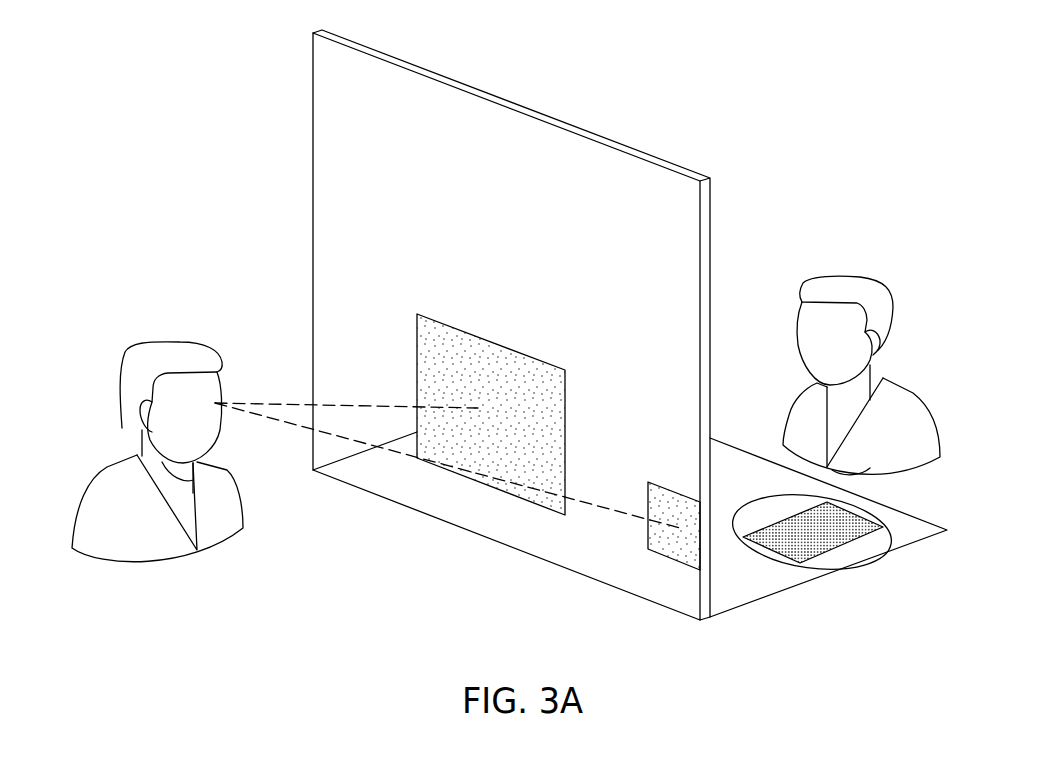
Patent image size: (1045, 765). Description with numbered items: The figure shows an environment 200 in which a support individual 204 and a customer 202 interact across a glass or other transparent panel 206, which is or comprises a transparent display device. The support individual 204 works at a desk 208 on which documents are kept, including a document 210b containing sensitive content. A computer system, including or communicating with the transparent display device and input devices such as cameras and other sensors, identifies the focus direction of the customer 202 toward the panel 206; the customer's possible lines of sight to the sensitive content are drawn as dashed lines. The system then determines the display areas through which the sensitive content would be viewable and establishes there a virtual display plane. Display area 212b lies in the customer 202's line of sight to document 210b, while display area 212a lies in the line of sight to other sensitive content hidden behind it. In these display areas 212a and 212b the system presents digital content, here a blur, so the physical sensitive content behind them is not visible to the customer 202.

The environment 200 is at (747, 67).
The customer 202 is at (123, 378).
The support individual 204 is at (895, 314).
The transparent panel 206 is at (467, 91).
The desk 208 is at (928, 533).
The document 210b is at (850, 533).
The display area 212a is at (437, 320).
The display area 212b is at (668, 557).